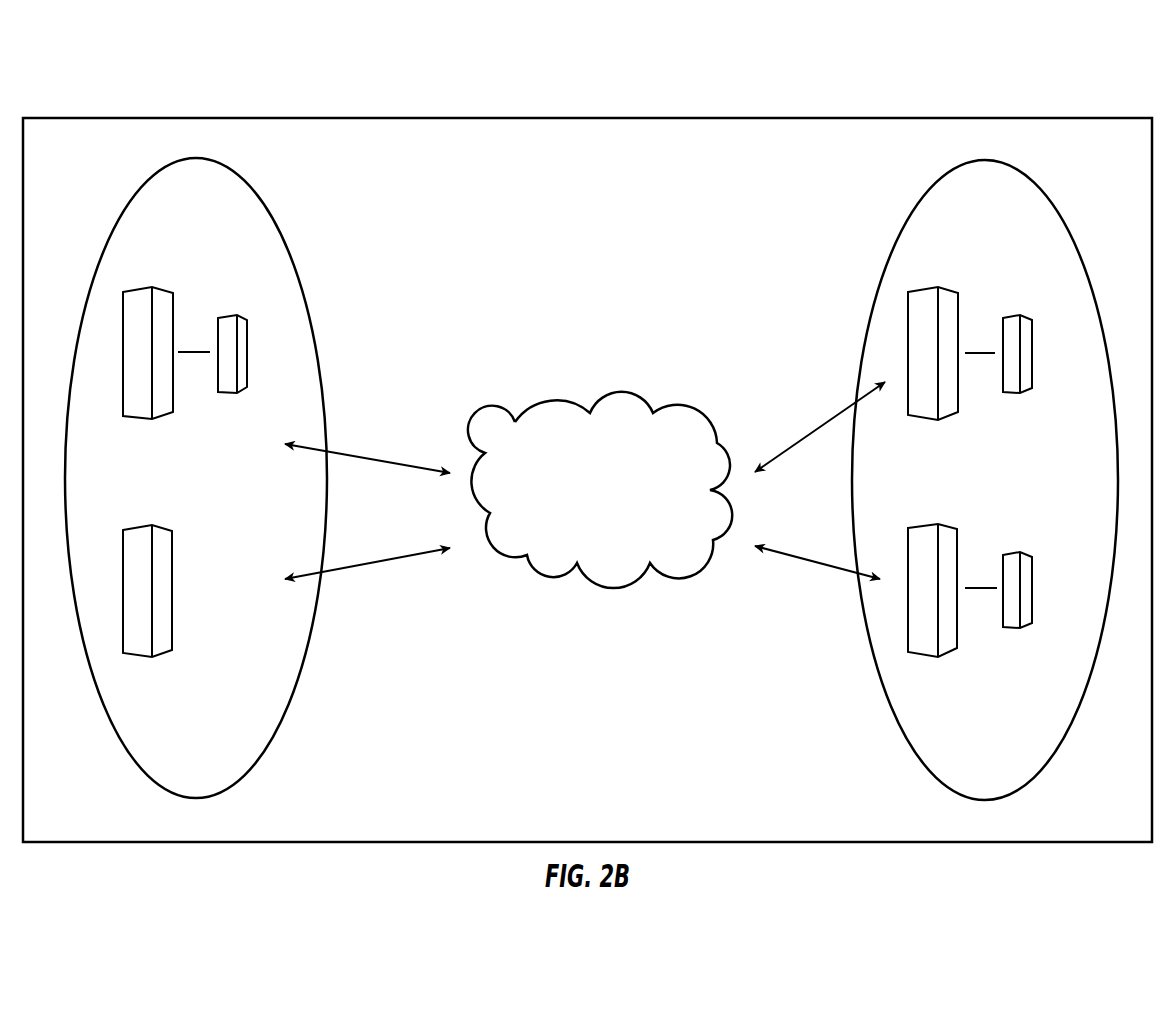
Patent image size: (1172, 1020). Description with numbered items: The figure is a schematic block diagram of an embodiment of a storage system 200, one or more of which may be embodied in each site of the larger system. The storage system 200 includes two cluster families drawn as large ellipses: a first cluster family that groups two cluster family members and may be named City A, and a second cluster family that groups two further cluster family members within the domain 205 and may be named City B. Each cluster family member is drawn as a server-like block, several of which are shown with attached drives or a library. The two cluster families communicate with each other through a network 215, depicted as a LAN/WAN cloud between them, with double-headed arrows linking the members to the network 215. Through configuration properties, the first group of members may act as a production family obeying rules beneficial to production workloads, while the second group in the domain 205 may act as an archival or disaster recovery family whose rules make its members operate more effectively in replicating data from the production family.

The storage system 200 is at (122, 66).
The domain 205 is at (615, 291).
The network 215 is at (683, 407).